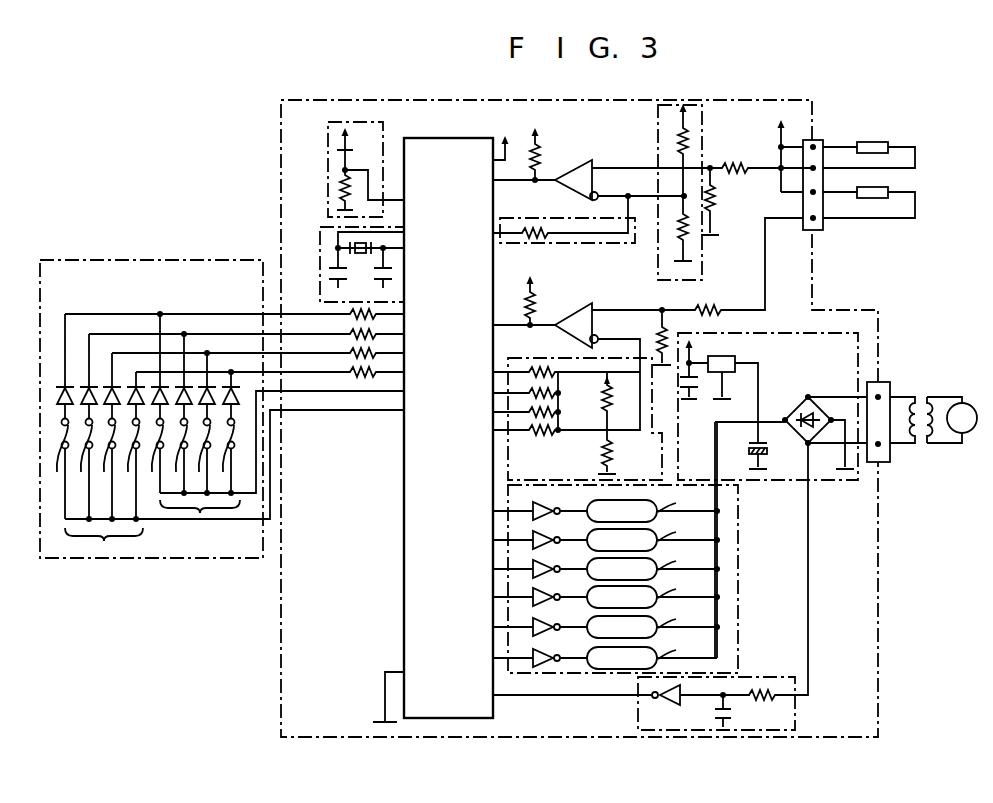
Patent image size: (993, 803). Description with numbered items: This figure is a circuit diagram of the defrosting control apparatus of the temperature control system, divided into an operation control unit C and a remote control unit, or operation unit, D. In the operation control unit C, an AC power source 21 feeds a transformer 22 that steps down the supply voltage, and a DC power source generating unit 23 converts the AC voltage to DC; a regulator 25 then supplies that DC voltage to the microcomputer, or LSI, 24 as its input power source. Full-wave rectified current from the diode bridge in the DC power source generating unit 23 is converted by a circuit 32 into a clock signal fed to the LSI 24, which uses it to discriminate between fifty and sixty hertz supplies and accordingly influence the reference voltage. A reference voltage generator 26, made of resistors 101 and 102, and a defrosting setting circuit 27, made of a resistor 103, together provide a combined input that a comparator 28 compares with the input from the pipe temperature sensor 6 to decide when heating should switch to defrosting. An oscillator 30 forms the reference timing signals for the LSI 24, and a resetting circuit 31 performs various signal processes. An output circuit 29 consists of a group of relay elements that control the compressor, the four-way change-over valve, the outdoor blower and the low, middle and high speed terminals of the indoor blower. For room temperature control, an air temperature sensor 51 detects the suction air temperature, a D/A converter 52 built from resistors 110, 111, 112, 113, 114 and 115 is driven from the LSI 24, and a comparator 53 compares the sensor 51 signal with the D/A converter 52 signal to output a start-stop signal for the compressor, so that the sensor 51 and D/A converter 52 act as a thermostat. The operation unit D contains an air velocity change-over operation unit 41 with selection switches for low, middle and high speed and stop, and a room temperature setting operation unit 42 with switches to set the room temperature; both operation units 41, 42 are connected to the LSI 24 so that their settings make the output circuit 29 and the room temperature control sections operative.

The operation control unit C is at (281, 128).
The remote control unit (operation unit) D is at (82, 258).
The pipe temperature sensor 6 is at (878, 141).
The AC power source 21 is at (963, 400).
The transformer 22 is at (916, 397).
The DC power source generating unit 23 is at (773, 478).
The microcomputer (LSI) 24 is at (412, 137).
The regulator 25 is at (736, 357).
The reference voltage generator 26 is at (715, 189).
The defrosting setting circuit 27 is at (564, 233).
The comparator 28 is at (566, 160).
The output circuit 29 is at (740, 557).
The oscillator 30 is at (321, 234).
The resetting circuit 31 is at (333, 172).
The clock circuit 32 is at (797, 707).
The air velocity change-over operation unit 41 is at (104, 541).
The room temperature setting operation unit 42 is at (200, 513).
The air temperature sensor 51 is at (890, 190).
The D/A converter 52 is at (577, 405).
The comparator 53 is at (594, 306).
The resistor 101 is at (690, 140).
The resistor 102 is at (690, 246).
The resistor 103 is at (540, 238).
The resistor 110 is at (609, 455).
The resistor 111 is at (627, 388).
The resistor 112 is at (532, 436).
The resistor 113 is at (548, 418).
The resistor 114 is at (550, 395).
The resistor 115 is at (550, 372).